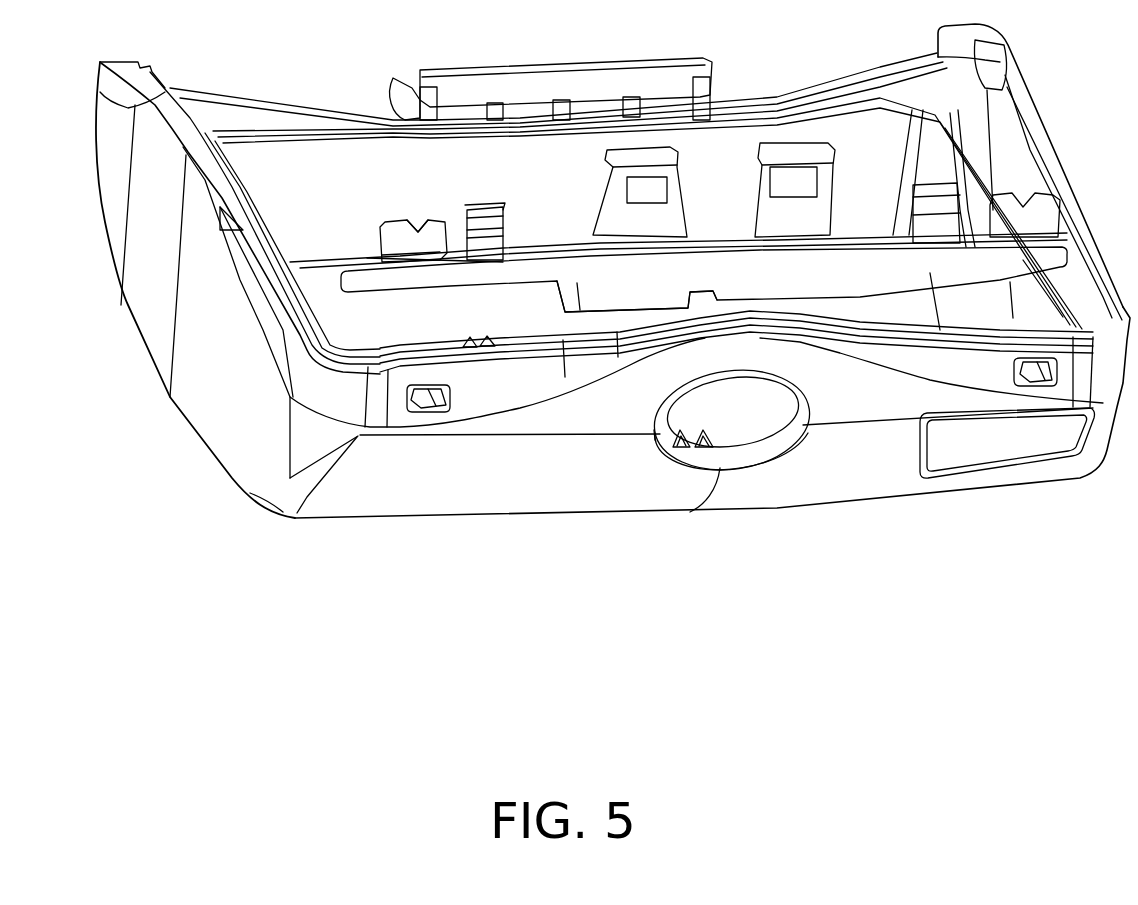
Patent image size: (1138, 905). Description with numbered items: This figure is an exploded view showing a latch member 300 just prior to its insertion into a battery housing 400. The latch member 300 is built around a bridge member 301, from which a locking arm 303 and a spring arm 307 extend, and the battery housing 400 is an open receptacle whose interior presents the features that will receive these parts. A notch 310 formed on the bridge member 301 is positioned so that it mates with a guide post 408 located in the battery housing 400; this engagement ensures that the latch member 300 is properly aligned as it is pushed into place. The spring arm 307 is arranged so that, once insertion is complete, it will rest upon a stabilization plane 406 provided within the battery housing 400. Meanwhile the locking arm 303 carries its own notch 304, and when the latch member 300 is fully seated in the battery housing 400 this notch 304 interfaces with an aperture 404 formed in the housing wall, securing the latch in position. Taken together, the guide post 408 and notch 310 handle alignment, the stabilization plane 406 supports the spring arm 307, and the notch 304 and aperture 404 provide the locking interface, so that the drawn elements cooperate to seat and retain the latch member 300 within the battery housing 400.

The latch member 300 is at (700, 233).
The bridge member 301 is at (800, 287).
The locking arm 303 is at (382, 228).
The notch 304 is at (415, 218).
The spring arm 307 is at (487, 207).
The notch 310 is at (692, 303).
The battery housing 400 is at (577, 513).
The aperture 404 is at (426, 406).
The stabilization plane 406 is at (465, 345).
The guide post 408 is at (700, 433).